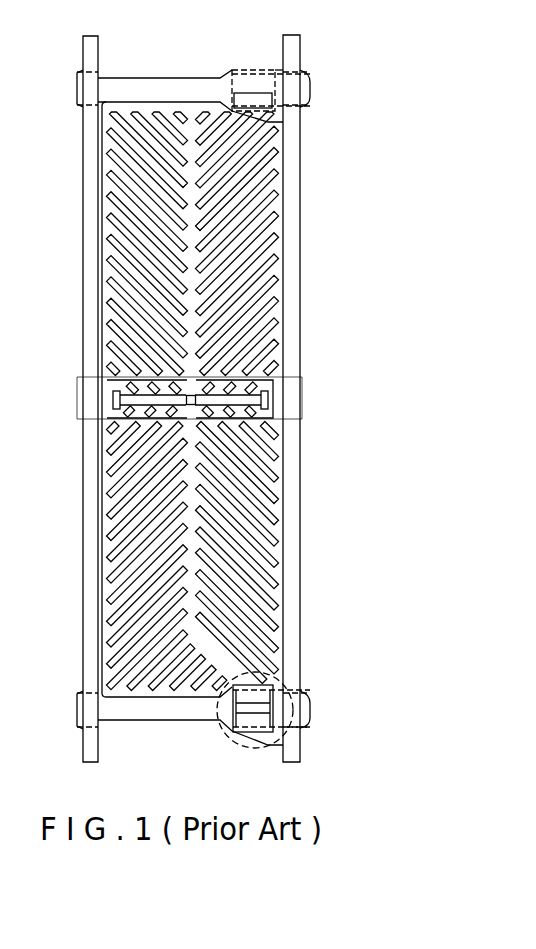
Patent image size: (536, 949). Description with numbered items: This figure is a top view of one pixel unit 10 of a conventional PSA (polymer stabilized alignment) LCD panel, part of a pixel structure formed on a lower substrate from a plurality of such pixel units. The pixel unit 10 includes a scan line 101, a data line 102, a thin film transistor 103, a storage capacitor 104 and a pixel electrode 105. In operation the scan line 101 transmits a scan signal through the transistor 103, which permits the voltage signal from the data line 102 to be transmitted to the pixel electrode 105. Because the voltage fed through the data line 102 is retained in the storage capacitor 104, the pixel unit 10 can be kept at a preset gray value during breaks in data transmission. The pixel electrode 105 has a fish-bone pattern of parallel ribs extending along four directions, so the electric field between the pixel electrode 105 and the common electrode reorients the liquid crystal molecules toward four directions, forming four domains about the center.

The pixel unit 10 is at (353, 93).
The scan line 101 is at (145, 712).
The data line 102 is at (295, 580).
The thin film transistor 103 is at (278, 679).
The storage capacitor 104 is at (280, 382).
The pixel electrode 105 is at (268, 230).